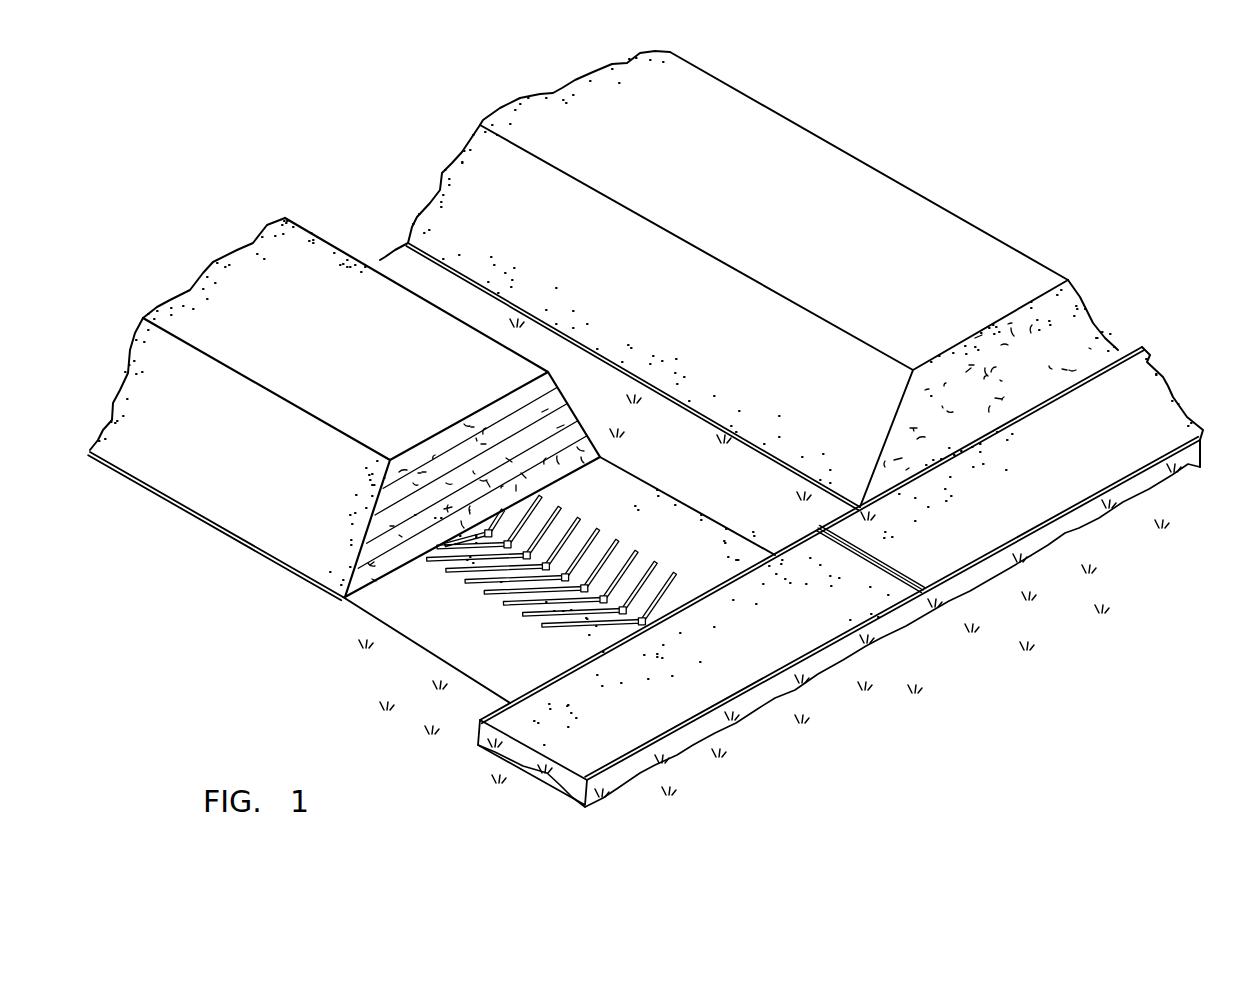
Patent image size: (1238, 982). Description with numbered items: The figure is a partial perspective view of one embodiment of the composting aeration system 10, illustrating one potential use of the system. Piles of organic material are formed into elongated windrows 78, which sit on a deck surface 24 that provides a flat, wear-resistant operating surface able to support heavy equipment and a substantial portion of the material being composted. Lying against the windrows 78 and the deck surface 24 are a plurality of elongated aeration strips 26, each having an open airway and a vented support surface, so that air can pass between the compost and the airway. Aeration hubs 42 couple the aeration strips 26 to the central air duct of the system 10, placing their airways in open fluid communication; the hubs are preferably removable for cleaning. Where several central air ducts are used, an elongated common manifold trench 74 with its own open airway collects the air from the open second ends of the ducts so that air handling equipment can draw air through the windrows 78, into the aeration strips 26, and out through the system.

The composting aeration system 10 is at (373, 224).
The windrows 78 is at (310, 515).
The deck surface 24 is at (427, 611).
The aeration hubs 42 is at (573, 576).
The aeration strips 26 is at (622, 548).
The manifold trench 74 is at (830, 660).